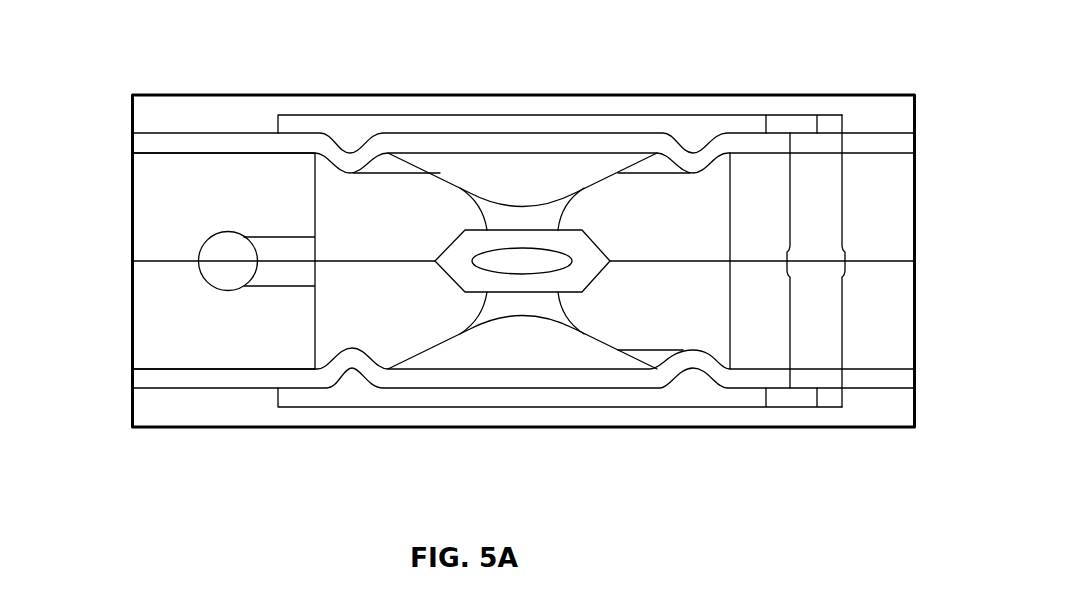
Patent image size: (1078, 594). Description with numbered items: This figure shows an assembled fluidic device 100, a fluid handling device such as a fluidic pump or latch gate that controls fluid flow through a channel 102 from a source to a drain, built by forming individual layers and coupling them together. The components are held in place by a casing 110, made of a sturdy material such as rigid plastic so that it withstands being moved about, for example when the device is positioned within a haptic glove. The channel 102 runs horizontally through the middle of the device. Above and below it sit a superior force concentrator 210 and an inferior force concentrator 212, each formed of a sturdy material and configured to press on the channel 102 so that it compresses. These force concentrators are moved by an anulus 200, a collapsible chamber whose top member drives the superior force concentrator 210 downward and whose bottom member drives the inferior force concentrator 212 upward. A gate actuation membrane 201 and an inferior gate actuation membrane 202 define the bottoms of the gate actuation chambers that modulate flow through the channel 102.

The fluidic device 100 is at (255, 65).
The casing 110 is at (200, 400).
The anulus 200 is at (477, 313).
The gate actuation membrane 201 is at (620, 133).
The inferior gate actuation membrane 202 is at (353, 368).
The superior force concentrator 210 is at (529, 180).
The inferior force concentrator 212 is at (558, 353).
The channel 102 is at (510, 276).